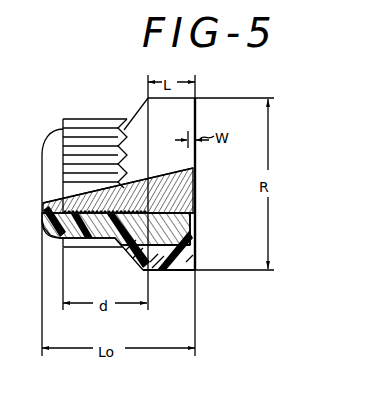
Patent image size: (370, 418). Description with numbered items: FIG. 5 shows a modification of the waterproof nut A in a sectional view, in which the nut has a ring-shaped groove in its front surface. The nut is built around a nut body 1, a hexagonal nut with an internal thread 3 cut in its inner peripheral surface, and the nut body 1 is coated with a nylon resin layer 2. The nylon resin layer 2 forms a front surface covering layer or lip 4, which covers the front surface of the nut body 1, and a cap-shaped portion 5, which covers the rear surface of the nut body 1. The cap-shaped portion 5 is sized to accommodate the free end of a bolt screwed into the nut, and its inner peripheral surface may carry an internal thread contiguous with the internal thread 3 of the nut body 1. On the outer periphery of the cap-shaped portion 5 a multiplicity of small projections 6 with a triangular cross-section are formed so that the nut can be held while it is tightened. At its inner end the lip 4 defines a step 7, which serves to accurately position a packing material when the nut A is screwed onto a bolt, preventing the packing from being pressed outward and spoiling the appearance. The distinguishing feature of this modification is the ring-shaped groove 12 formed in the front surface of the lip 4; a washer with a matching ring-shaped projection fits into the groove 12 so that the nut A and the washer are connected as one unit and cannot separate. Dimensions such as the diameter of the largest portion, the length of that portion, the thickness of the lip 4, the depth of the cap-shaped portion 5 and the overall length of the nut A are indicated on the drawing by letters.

The nut body 1 is at (150, 271).
The nylon resin layer 2 is at (176, 272).
The internal thread 3 is at (182, 184).
The lip 4 is at (196, 234).
The cap-shaped portion 5 is at (90, 228).
The small projections 6 is at (76, 116).
The step 7 is at (197, 212).
The ring-shaped groove 12 is at (196, 252).
The waterproof nut A is at (132, 97).